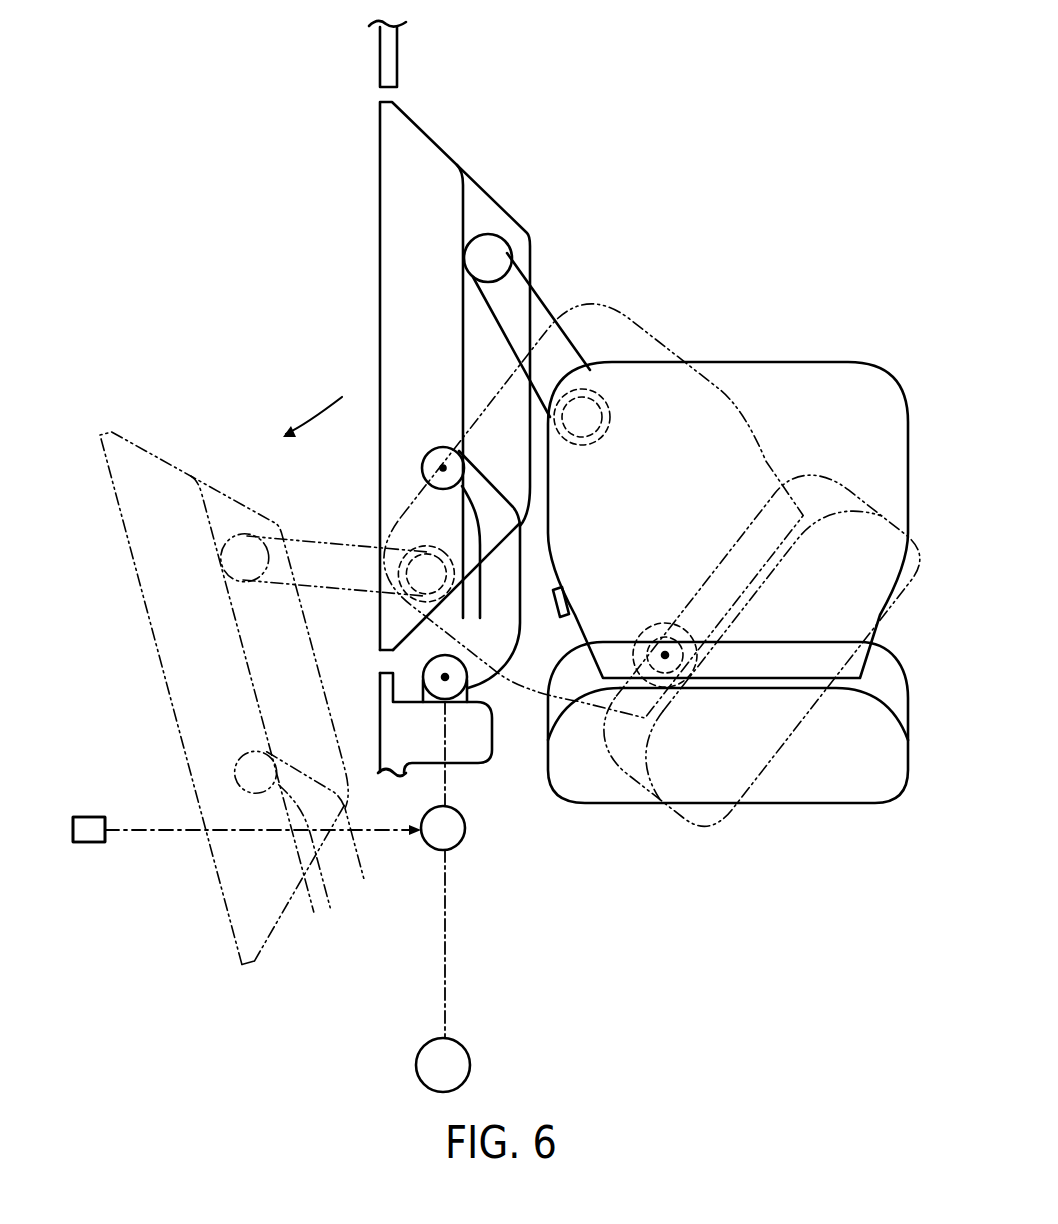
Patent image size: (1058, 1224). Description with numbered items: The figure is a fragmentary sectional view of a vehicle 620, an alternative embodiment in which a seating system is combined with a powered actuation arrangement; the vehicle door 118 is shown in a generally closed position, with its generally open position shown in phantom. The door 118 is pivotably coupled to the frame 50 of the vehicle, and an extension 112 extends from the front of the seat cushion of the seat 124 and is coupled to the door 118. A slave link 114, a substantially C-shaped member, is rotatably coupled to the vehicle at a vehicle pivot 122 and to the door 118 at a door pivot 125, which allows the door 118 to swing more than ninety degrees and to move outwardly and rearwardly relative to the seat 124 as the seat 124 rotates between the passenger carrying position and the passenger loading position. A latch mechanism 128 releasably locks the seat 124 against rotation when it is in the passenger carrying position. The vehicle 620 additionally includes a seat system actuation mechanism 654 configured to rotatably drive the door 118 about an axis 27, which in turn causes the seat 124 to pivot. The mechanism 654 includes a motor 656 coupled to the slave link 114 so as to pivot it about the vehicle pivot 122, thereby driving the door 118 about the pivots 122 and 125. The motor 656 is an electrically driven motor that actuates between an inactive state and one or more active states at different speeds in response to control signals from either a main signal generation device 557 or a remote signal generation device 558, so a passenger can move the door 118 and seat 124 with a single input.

The vehicle 620 is at (252, 85).
The vehicle door 118 is at (378, 268).
The extension 112 is at (543, 315).
The door pivot 125 is at (443, 467).
The slave link 114 is at (488, 593).
The seat 124 is at (912, 426).
The latch mechanism 128 is at (553, 599).
The axis 27 is at (665, 655).
The vehicle pivot 122 is at (447, 679).
The frame 50 is at (460, 753).
The motor 656 is at (430, 848).
The seat system actuation mechanism 654 is at (86, 808).
The remote signal generation device 558 is at (90, 845).
The main signal generation device 557 is at (420, 1073).